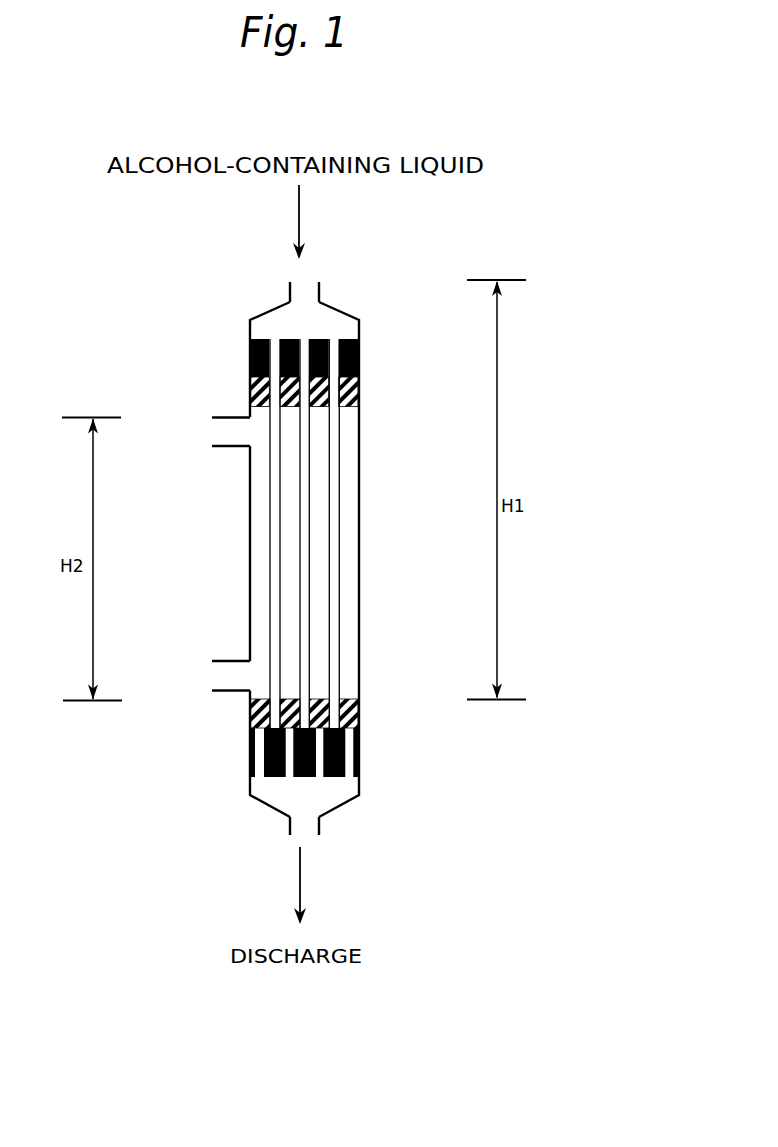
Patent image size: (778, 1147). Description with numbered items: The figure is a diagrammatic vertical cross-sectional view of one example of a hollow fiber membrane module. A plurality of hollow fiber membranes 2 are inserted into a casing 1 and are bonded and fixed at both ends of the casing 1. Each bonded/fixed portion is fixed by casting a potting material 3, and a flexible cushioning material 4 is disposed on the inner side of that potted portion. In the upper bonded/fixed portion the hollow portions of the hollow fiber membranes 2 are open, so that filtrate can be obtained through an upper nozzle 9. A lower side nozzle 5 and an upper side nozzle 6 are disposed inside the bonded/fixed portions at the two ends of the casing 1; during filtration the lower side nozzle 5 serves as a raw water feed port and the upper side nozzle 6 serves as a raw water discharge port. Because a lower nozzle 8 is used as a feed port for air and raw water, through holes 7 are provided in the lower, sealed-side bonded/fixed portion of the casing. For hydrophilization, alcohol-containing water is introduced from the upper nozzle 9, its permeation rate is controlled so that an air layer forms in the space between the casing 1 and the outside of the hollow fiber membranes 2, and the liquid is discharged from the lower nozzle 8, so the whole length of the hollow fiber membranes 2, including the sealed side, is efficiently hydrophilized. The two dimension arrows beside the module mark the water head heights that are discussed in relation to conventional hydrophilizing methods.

The casing 1 is at (359, 426).
The hollow fiber membranes 2 is at (338, 505).
The potting material 3 is at (358, 360).
The cushioning material 4 is at (347, 398).
The lower side nozzle 5 is at (202, 682).
The upper side nozzle 6 is at (201, 437).
The through holes 7 is at (349, 748).
The lower nozzle 8 is at (310, 845).
The upper nozzle 9 is at (318, 270).